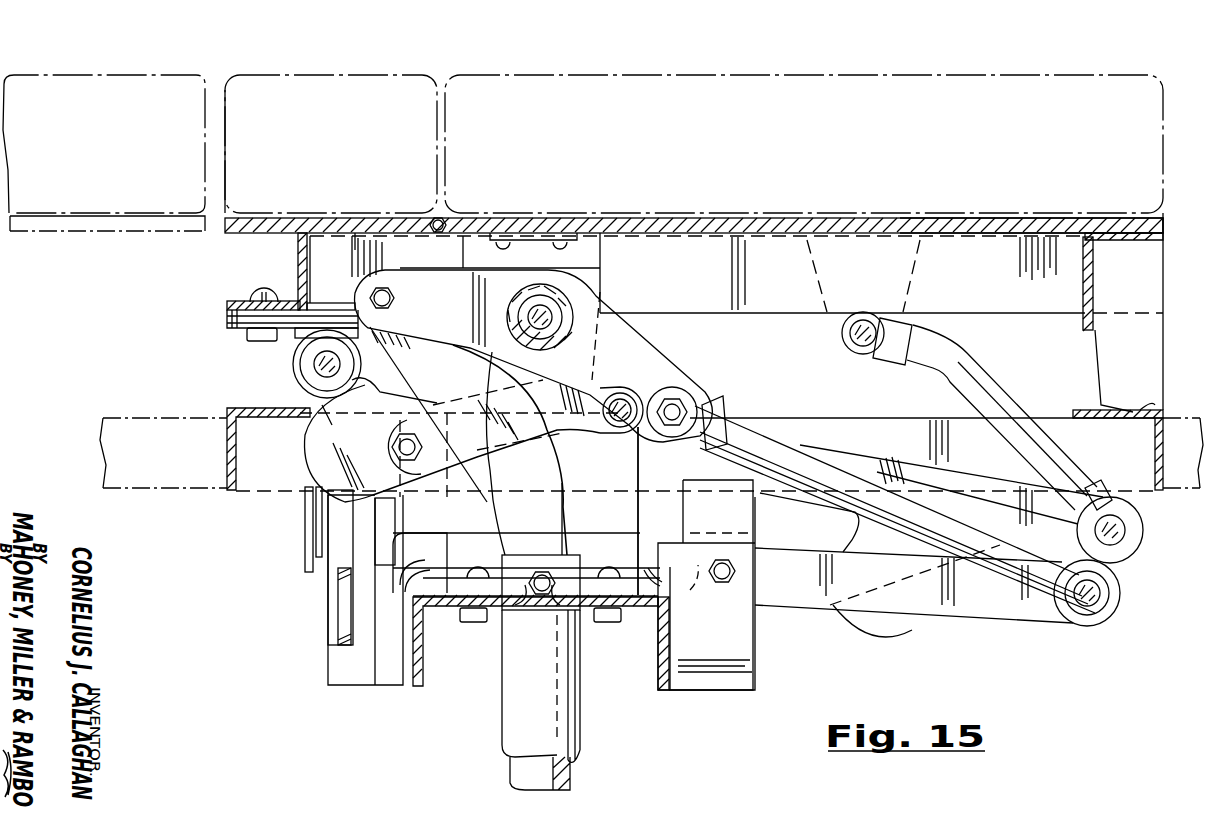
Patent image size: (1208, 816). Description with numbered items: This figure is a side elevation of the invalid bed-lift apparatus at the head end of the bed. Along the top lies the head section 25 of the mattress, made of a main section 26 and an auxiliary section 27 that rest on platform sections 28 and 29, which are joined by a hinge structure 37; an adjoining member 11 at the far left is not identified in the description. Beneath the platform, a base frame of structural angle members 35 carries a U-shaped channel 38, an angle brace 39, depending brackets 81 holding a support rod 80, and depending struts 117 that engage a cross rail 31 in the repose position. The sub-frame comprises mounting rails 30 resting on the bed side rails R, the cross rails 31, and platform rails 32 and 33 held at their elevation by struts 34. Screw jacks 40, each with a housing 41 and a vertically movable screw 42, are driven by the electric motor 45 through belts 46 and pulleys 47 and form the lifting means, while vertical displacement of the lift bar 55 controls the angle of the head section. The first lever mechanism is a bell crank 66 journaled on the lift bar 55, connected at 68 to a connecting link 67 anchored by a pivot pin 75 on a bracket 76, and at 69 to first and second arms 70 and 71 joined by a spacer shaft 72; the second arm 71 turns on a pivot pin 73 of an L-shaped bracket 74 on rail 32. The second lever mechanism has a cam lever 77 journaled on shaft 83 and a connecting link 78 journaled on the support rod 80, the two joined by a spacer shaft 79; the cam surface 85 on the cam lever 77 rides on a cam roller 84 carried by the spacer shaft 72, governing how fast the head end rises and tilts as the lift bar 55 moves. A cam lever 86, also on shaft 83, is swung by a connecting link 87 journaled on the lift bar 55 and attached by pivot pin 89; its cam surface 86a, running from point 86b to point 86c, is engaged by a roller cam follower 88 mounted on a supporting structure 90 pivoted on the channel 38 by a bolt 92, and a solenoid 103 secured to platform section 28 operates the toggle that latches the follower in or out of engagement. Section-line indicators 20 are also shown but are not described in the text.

The seat cushion panel 11 is at (135, 75).
The auxiliary section 27 is at (298, 75).
The main section 26 is at (1015, 75).
The head section 25 is at (792, 62).
The platform section 29 is at (330, 218).
The platform section 28 is at (1020, 232).
The hinge structure 37 is at (445, 218).
The U-shaped channel 38 is at (258, 235).
The bolt 92 is at (266, 294).
The supporting structure 90 is at (222, 313).
The cam follower 88 is at (294, 375).
The pivot connection 68 is at (396, 297).
The bell crank 66 is at (636, 342).
The lift bar 55 is at (572, 324).
The solenoid 103 is at (603, 268).
The structural angle members 35 is at (955, 291).
The structural angle brace 39 is at (1083, 282).
The support rod 80 is at (850, 333).
The depending brackets 81 is at (846, 348).
The connecting link 78 is at (975, 375).
The cam lever 77 is at (940, 484).
The point 86b is at (364, 388).
The cam surface 86a is at (306, 444).
The cam lever 86 is at (570, 458).
The point 86c is at (400, 500).
The pivot pin 89 is at (394, 447).
The connecting link 87 is at (600, 420).
The shaft 83 is at (623, 393).
The pivot connection 69 is at (688, 403).
The first arm 70 is at (765, 438).
The mounting rails 30 is at (872, 430).
The depending struts 117 is at (1102, 383).
The cross rails 31 is at (230, 408).
The side rails R is at (163, 418).
The spacer shaft 79 is at (1144, 533).
The connecting link 67 is at (518, 512).
The electric motor 45 is at (596, 528).
The pulleys 47 is at (306, 563).
The belts 46 is at (330, 610).
The struts 34 is at (368, 690).
The platform rail 33 is at (424, 665).
The mounting bracket 76 is at (580, 546).
The direction arrow 20 is at (575, 574).
The housing 41 is at (506, 728).
The screw 42 is at (525, 780).
The screw jacks 40 is at (590, 722).
The pivot pin 75 is at (540, 600).
The platform rail 32 is at (658, 652).
The pivot pin 73 is at (727, 585).
The L-shaped bracket 74 is at (718, 690).
The second arm 71 is at (805, 607).
The cam roller 84 is at (1122, 585).
The spacer shaft 72 is at (1108, 605).
The cam surface 85 is at (912, 632).